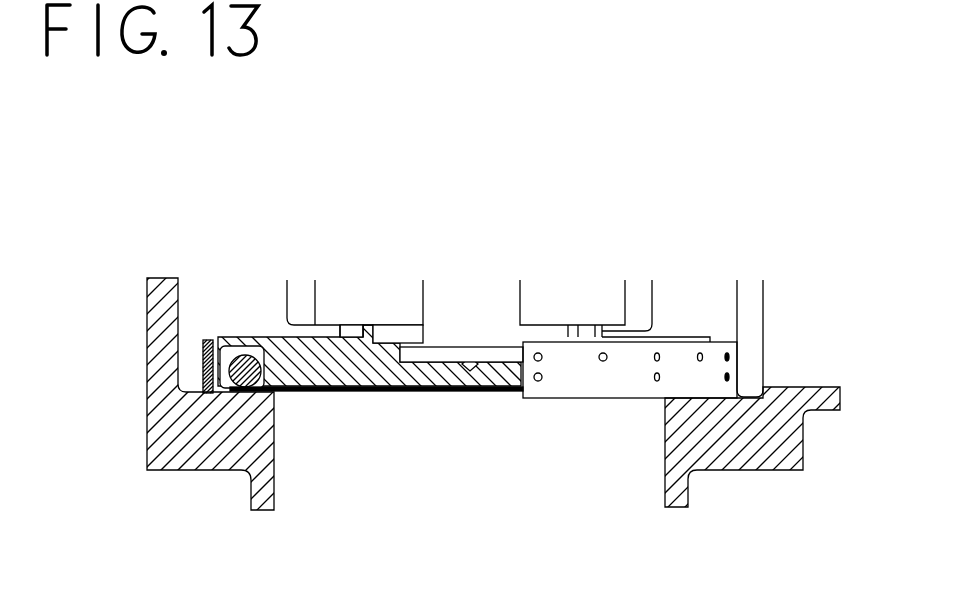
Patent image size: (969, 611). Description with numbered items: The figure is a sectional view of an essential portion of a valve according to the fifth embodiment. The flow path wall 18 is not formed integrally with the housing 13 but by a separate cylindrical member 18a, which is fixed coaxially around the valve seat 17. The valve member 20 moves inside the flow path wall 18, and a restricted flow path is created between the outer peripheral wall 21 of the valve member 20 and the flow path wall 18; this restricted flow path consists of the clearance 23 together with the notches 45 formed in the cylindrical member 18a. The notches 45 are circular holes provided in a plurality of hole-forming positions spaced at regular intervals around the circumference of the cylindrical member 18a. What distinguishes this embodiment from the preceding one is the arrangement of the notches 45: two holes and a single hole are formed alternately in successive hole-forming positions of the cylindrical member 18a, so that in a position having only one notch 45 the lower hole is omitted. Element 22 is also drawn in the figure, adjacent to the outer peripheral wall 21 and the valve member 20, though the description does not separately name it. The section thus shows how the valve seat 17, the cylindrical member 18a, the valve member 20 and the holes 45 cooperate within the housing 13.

The housing 13 is at (757, 433).
The valve seat 17 is at (255, 393).
The flow path wall 18 is at (702, 316).
The cylindrical member 18a is at (215, 338).
The valve member 20 is at (407, 388).
The outer peripheral wall 21 is at (262, 338).
The block 22 is at (264, 357).
The clearance 23 is at (219, 338).
The notches 45 is at (203, 377).